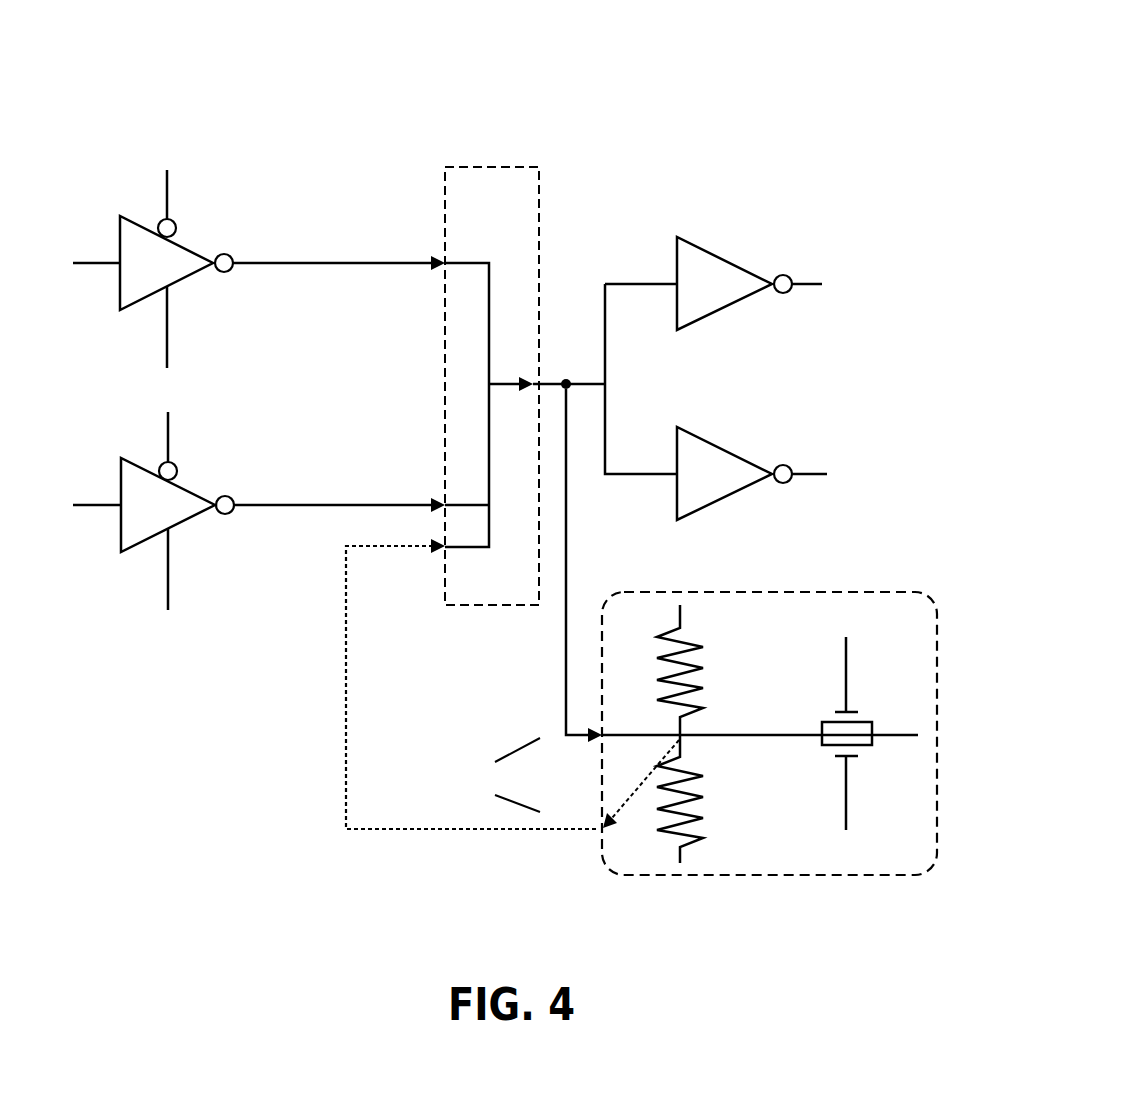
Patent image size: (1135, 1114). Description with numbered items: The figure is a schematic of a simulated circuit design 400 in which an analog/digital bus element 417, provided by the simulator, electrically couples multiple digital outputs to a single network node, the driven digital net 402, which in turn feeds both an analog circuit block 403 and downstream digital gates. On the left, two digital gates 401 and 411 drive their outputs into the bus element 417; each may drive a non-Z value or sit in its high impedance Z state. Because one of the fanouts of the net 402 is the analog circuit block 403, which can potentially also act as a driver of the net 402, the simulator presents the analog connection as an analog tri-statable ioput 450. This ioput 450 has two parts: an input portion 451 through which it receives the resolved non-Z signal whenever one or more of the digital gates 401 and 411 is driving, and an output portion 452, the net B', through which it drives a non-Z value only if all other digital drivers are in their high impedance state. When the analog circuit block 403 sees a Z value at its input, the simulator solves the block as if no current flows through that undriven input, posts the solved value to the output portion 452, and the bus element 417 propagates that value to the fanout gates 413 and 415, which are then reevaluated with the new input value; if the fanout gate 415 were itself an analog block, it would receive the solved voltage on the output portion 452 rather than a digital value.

The circuit design 400 is at (675, 98).
The digital gate 401 is at (190, 240).
The digital gate 411 is at (191, 482).
The analog/digital bus element 417 is at (539, 201).
The driven digital net 402 is at (566, 380).
The fanout gate 413 is at (743, 268).
The fanout gate 415 is at (745, 458).
The analog circuit block 403 is at (870, 592).
The input portion 451 is at (565, 662).
The output portion 452 is at (345, 706).
The analog tri-statable ioput 450 is at (334, 802).